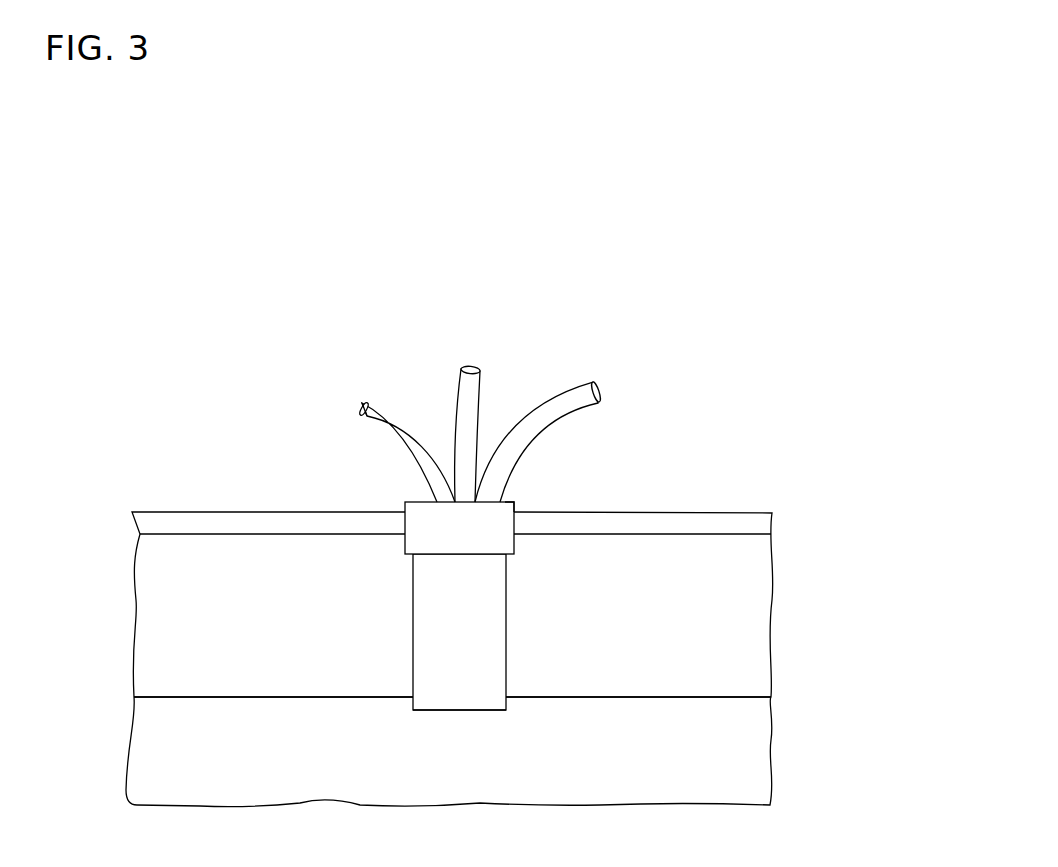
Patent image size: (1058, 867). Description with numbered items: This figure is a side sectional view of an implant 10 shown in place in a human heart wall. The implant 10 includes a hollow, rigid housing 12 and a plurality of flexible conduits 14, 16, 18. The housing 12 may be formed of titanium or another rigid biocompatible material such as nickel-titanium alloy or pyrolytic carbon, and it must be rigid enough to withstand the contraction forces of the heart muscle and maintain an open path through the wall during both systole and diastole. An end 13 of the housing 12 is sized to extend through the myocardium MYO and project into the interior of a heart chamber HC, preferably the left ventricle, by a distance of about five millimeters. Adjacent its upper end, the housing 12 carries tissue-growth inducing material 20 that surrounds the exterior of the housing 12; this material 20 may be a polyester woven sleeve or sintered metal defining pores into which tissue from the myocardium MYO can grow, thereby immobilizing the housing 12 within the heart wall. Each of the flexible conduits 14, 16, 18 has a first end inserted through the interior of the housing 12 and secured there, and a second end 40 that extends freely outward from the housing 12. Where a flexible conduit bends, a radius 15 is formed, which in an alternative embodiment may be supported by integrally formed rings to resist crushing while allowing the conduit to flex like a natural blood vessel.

The implant 10 is at (455, 631).
The housing 12 is at (411, 626).
The end of the housing 13 is at (473, 722).
The flexible conduit 14 is at (383, 400).
The radius 15 is at (507, 508).
The flexible conduit 16 is at (468, 360).
The flexible conduit 18 is at (585, 378).
The tissue-growth inducing material 20 is at (417, 535).
The second end 40 is at (358, 407).
The myocardium MYO is at (772, 608).
The heart chamber HC is at (770, 746).